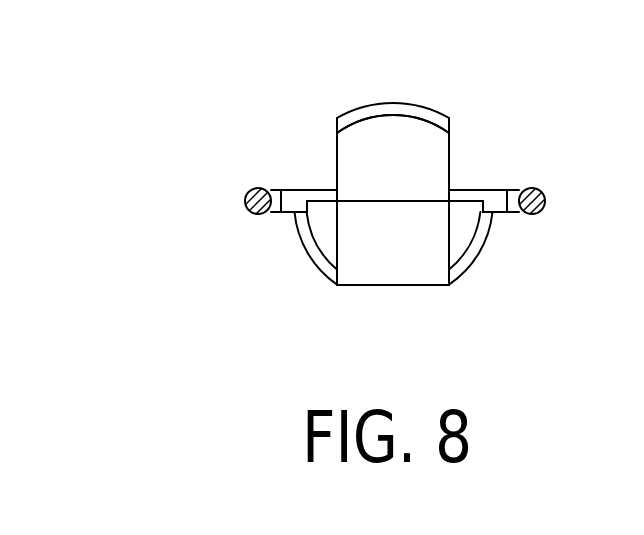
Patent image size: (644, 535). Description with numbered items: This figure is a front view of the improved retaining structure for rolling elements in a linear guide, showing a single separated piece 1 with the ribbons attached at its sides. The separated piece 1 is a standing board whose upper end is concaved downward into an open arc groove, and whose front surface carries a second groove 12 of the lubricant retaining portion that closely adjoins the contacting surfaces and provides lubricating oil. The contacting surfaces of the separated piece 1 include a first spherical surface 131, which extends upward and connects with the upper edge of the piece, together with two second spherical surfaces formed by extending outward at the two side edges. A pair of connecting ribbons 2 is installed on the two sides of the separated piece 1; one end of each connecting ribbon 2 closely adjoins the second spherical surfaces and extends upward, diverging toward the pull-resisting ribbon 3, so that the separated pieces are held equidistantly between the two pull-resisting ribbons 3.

The separated piece 1 is at (392, 103).
The second groove 12 is at (397, 260).
The first spherical surface 131 is at (430, 171).
The connecting ribbon 2 is at (292, 205).
The pull-resisting ribbon 3 is at (546, 191).